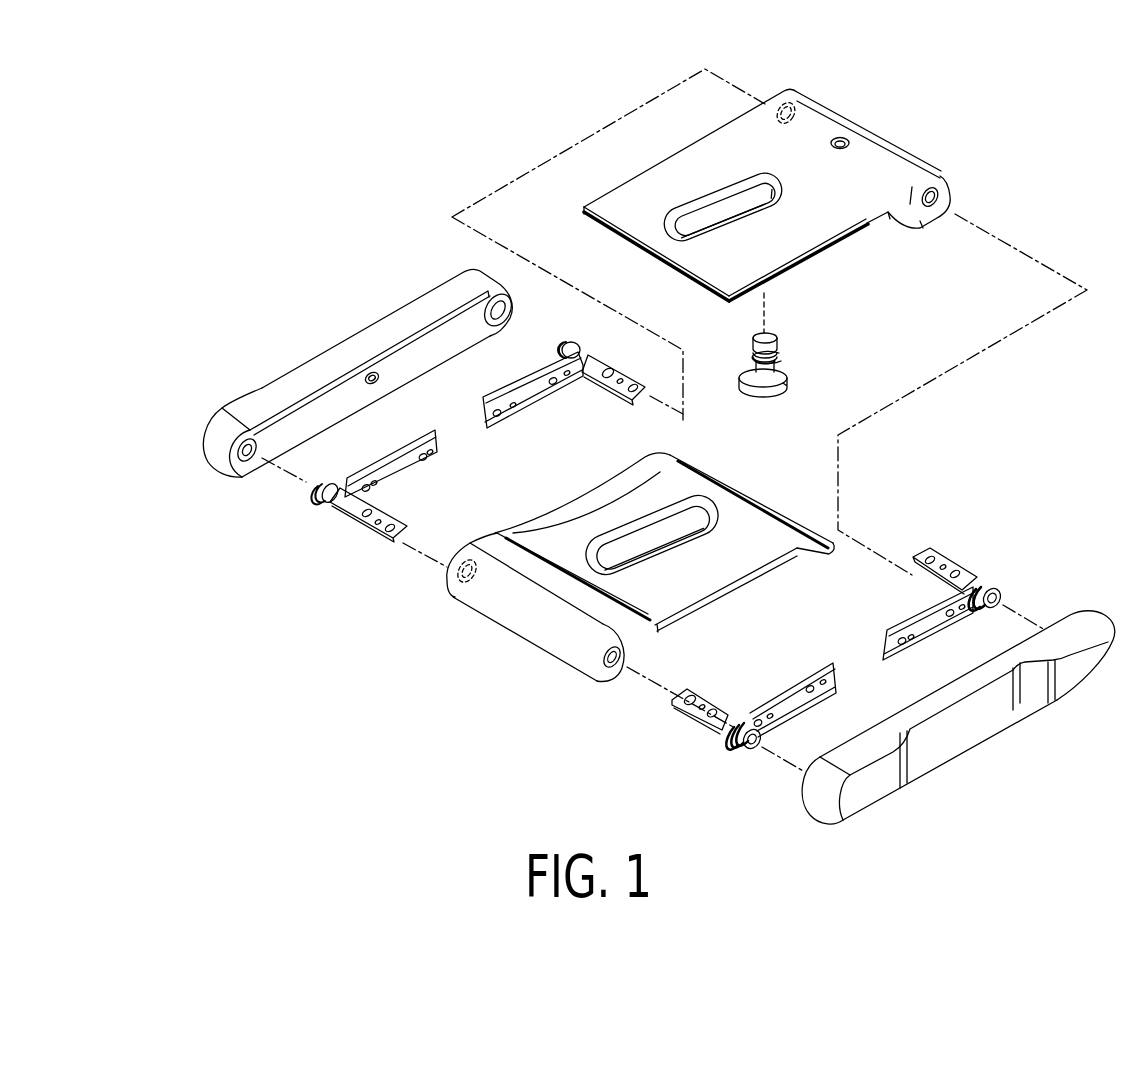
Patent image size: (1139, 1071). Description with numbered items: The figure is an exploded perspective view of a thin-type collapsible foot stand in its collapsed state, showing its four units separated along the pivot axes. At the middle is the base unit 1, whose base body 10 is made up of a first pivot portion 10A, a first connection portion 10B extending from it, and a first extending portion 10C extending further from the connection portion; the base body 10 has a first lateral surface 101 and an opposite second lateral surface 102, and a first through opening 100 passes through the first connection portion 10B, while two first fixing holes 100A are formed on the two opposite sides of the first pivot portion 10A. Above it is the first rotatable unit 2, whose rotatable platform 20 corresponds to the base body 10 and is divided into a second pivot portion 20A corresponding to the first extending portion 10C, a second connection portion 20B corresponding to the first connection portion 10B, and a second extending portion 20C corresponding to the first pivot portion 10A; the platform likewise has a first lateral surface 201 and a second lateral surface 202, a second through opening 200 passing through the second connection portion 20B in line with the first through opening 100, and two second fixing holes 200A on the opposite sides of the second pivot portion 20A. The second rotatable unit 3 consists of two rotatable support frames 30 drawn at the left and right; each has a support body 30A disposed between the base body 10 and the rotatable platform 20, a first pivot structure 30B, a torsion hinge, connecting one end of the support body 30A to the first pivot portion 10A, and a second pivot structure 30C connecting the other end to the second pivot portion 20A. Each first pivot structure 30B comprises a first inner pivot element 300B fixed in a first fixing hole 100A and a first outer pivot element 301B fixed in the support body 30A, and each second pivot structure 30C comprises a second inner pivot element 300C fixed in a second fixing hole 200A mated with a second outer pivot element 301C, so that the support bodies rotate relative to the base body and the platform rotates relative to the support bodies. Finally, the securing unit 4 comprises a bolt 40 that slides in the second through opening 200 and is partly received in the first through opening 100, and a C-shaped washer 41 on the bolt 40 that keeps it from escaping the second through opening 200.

The base unit 1 is at (416, 729).
The base body 10 is at (470, 725).
The first pivot portion 10A is at (575, 647).
The first connection portion 10B is at (593, 613).
The first extending portion 10C is at (467, 583).
The first through opening 100 is at (694, 522).
The first fixing holes 100A is at (472, 575).
The first lateral surface 101 is at (742, 594).
The second lateral surface 102 is at (536, 522).
The first rotatable unit 2 is at (941, 321).
The rotatable platform 20 is at (944, 271).
The second pivot portion 20A is at (928, 218).
The second connection portion 20B is at (840, 234).
The second extending portion 20C is at (743, 298).
The second through opening 200 is at (706, 216).
The second fixing holes 200A is at (773, 104).
The first lateral surface 201 is at (910, 198).
The second lateral surface 202 is at (632, 176).
The second rotatable unit 3 is at (318, 241).
The rotatable support frames 30 is at (364, 244).
The support body 30A is at (372, 352).
The first pivot structure 30B is at (370, 462).
The second pivot structure 30C is at (520, 350).
The first inner pivot element 300B is at (693, 713).
The first outer pivot element 301B is at (787, 707).
The second inner pivot element 300C is at (937, 556).
The second outer pivot element 301C is at (967, 580).
The securing unit 4 is at (819, 433).
The bolt 40 is at (760, 383).
The C-shaped washer 41 is at (782, 363).